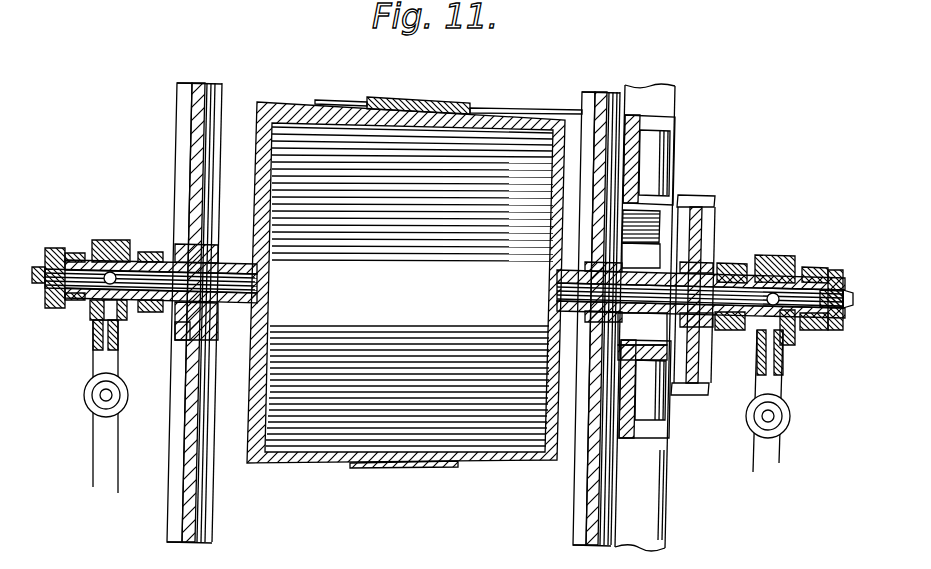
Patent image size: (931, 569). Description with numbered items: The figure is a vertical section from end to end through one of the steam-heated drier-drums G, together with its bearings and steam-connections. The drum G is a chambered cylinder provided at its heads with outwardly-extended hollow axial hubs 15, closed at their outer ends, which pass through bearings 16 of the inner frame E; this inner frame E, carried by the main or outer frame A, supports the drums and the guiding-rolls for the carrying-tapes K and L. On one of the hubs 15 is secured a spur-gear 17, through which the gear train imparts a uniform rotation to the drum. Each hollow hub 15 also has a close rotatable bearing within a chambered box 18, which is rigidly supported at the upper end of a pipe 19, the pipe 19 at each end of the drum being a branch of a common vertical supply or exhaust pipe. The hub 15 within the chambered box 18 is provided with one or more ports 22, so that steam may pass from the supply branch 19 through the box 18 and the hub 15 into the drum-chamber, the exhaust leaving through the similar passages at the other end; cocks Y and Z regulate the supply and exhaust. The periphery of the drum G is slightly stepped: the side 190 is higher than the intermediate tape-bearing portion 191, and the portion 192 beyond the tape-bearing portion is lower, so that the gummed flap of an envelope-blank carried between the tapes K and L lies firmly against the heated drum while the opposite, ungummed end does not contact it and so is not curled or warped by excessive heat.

The hollow axial hub 15 is at (258, 263).
The bearing 16 is at (219, 306).
The spur-gear 17 is at (707, 295).
The chambered box 18 is at (795, 258).
The pipe 19 is at (110, 343).
The port 22 is at (132, 246).
The side of the drum 190 is at (297, 102).
The tape-bearing portion 191 is at (397, 97).
The portion beyond the tape-bearing portion 192 is at (511, 113).
The main or outer frame A is at (645, 317).
The inner frame E is at (574, 503).
The drier-drum G is at (406, 282).
The carrying-tape K is at (450, 100).
The carrying-tape L is at (415, 100).
The cock Y is at (113, 395).
The cock Z is at (776, 416).